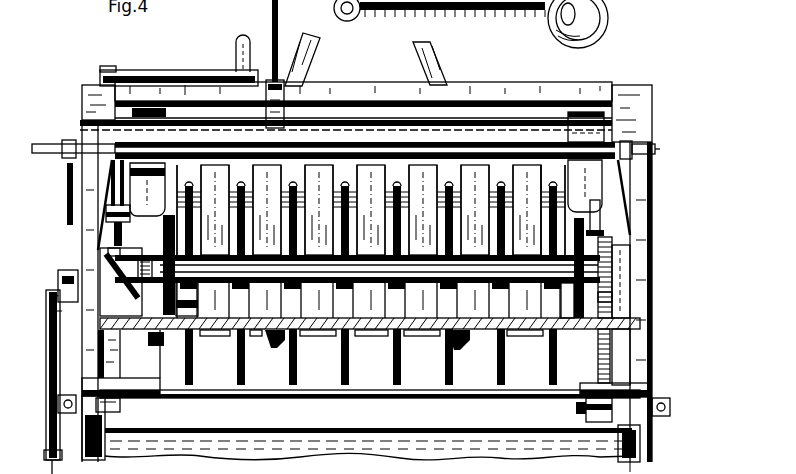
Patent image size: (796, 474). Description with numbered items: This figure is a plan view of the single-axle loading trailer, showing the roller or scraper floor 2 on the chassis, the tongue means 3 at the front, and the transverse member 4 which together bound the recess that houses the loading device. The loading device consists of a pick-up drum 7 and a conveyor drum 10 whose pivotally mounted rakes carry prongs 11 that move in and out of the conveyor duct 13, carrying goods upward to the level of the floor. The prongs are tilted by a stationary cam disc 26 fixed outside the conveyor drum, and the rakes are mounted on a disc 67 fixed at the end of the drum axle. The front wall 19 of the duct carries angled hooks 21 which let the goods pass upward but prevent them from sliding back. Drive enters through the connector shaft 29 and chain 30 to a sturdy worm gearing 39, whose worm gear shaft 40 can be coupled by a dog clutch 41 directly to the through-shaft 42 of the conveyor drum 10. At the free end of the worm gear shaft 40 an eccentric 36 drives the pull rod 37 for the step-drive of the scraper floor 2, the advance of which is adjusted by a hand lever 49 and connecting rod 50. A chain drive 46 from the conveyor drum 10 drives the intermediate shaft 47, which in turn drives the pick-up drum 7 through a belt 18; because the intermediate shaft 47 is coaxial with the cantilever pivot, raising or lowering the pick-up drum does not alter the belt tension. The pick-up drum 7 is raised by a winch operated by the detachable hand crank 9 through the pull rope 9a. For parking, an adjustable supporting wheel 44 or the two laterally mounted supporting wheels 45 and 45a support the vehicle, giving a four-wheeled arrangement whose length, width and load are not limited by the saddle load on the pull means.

The roller or scraper floor 2 is at (90, 425).
The tongue means 3 is at (432, 66).
The transverse member 4 is at (527, 88).
The pick-up drum 7 is at (484, 129).
The detachable hand crank 9 is at (48, 143).
The pull rope 9a is at (110, 193).
The conveyor drum 10 is at (533, 268).
The prongs 11 is at (392, 366).
The conveyor duct 13 is at (327, 380).
The belt 18 is at (598, 220).
The front wall 19 is at (638, 322).
The hooks 21 is at (280, 342).
The cam disc 26 is at (100, 262).
The connector shaft 29 is at (237, 56).
The chain 30 is at (172, 72).
The eccentric 36 is at (76, 278).
The pull rod 37 is at (55, 433).
The worm gearing 39 is at (121, 282).
The worm gear shaft 40 is at (65, 375).
The dog clutch 41 is at (100, 250).
The through-shaft 42 is at (480, 292).
The adjustable supporting wheel 44 is at (600, 24).
The supporting wheel 45 is at (660, 400).
The supporting wheel 45a is at (60, 390).
The chain drive 46 is at (608, 247).
The intermediate shaft 47 is at (586, 408).
The hand lever 49 is at (271, 10).
The connecting rod 50 is at (68, 197).
The disc 67 is at (160, 340).